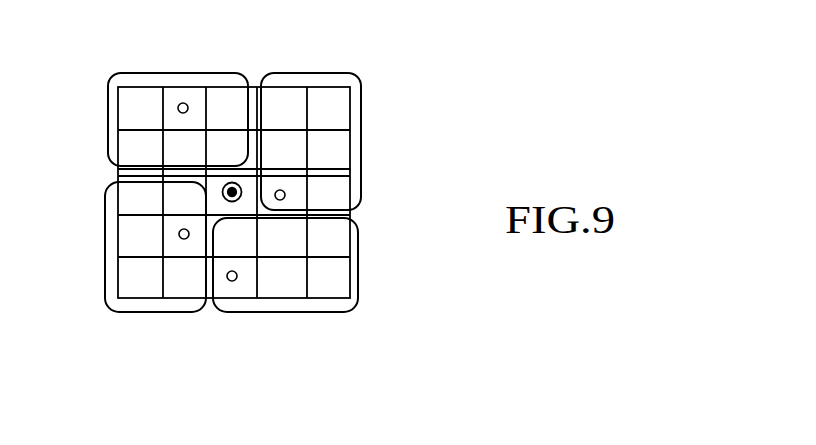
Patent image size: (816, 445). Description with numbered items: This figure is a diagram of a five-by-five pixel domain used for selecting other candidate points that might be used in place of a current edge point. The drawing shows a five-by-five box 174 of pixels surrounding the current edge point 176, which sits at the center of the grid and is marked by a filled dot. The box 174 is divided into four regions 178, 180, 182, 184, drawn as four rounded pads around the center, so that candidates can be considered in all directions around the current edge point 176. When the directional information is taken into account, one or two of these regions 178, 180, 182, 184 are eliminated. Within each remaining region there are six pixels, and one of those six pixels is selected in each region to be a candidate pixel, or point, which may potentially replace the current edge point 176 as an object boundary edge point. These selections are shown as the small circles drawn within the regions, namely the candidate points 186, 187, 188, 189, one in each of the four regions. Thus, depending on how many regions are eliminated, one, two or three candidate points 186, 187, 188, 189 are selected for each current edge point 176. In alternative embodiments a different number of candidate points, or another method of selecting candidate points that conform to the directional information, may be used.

The 5×5 box 174 is at (430, 71).
The current edge point 176 is at (222, 192).
The region 178 is at (363, 125).
The region 180 is at (359, 278).
The region 182 is at (105, 268).
The region 184 is at (108, 125).
The candidate point 186 is at (285, 194).
The candidate point 187 is at (233, 282).
The candidate point 188 is at (178, 234).
The candidate point 189 is at (185, 103).